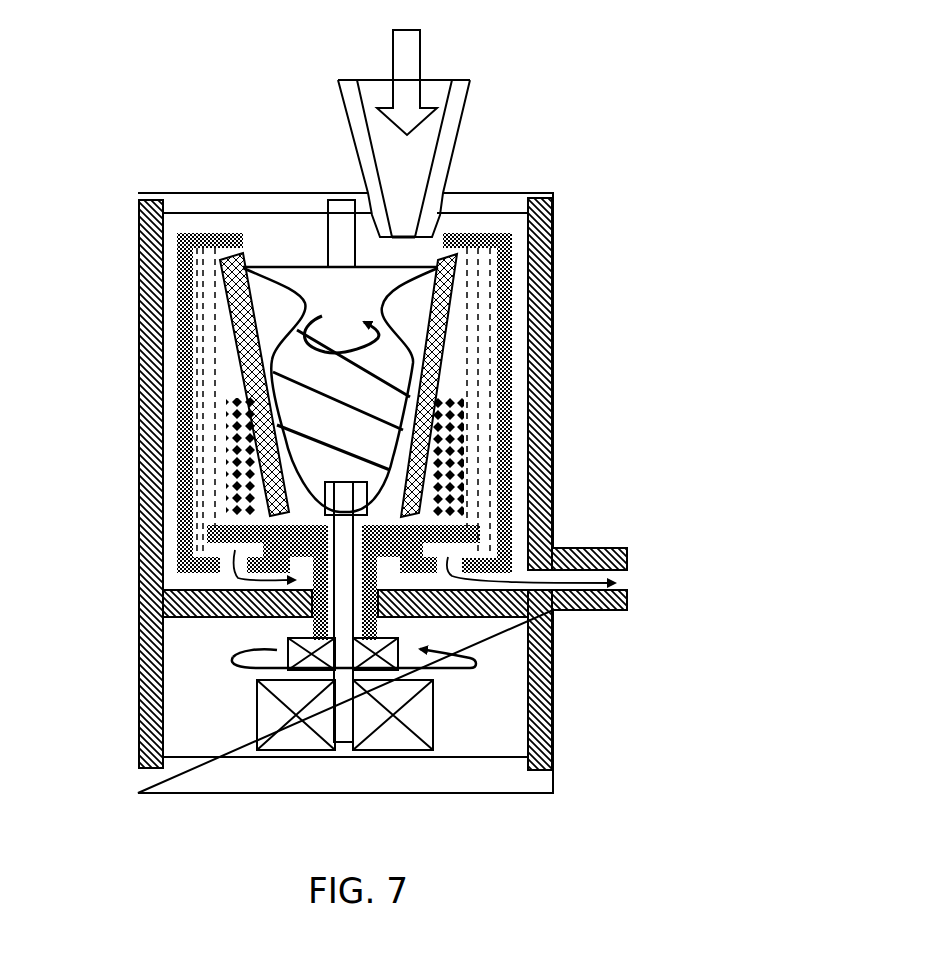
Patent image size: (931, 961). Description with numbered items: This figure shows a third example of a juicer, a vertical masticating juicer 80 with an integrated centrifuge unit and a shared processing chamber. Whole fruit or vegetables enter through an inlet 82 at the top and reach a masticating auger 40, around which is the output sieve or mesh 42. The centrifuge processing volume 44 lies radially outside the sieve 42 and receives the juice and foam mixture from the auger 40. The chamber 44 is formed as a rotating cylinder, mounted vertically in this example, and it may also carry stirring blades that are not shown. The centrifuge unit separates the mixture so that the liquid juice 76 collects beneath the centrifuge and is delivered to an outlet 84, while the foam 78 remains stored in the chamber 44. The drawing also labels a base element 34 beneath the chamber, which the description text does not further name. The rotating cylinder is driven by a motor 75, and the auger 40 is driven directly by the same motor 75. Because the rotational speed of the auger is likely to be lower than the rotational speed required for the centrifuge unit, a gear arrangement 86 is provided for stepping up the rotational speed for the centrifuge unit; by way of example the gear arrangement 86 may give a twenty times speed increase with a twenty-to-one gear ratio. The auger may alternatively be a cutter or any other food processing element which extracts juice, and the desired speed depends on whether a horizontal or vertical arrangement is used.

The vertical masticating juicer 80 is at (640, 230).
The inlet 82 is at (452, 133).
The liquid juice 76 is at (202, 323).
The crucible support base 34 is at (418, 528).
The output sieve 42 is at (240, 262).
The masticating auger 40 is at (305, 267).
The foam 78 is at (230, 452).
The centrifuge processing volume 44 is at (456, 382).
The outlet 84 is at (597, 550).
The gear arrangement 86 is at (290, 642).
The motor 75 is at (257, 728).